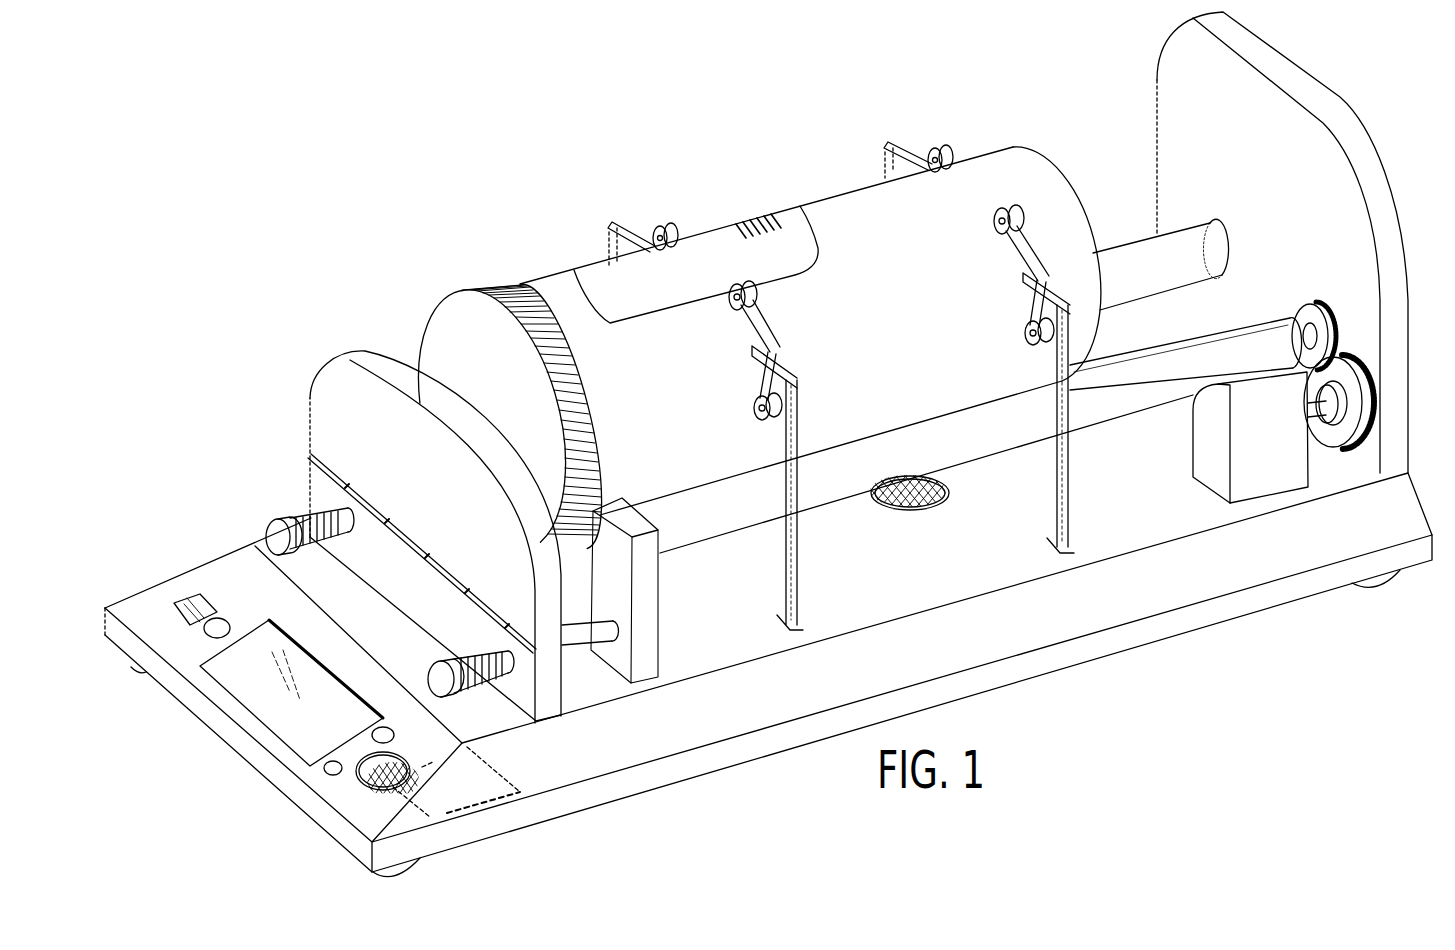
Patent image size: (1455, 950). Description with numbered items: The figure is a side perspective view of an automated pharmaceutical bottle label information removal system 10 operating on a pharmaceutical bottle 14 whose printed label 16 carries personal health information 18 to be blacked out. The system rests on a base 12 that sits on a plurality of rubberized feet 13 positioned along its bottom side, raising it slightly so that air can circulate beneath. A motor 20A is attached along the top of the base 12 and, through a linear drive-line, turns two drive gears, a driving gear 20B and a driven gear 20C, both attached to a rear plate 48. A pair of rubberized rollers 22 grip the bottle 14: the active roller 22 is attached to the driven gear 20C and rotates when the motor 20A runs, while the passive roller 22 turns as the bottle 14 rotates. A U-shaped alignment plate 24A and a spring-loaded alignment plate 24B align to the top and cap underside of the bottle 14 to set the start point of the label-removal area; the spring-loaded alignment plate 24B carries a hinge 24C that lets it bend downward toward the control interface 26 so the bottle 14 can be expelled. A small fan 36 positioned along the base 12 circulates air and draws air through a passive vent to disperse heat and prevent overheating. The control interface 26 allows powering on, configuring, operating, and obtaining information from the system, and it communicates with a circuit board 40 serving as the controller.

The automated pharmaceutical bottle label information removal system 10 is at (512, 90).
The base 12 is at (637, 740).
The plurality of feet 13 is at (403, 877).
The pharmaceutical bottle 14 is at (847, 207).
The printed label 16 is at (700, 263).
The personal health information 18 is at (597, 262).
The motor 20A is at (1267, 453).
The driving gear 20B is at (1367, 450).
The driven gear 20C is at (1325, 308).
The plurality of rollers 22 is at (1183, 272).
The alignment plate 24A is at (650, 623).
The spring-loaded alignment plate 24B is at (323, 403).
The hinge 24C is at (388, 522).
The control interface 26 is at (224, 575).
The small fan 36 is at (918, 495).
The circuit board 40 is at (477, 810).
The rear plate 48 is at (1400, 353).